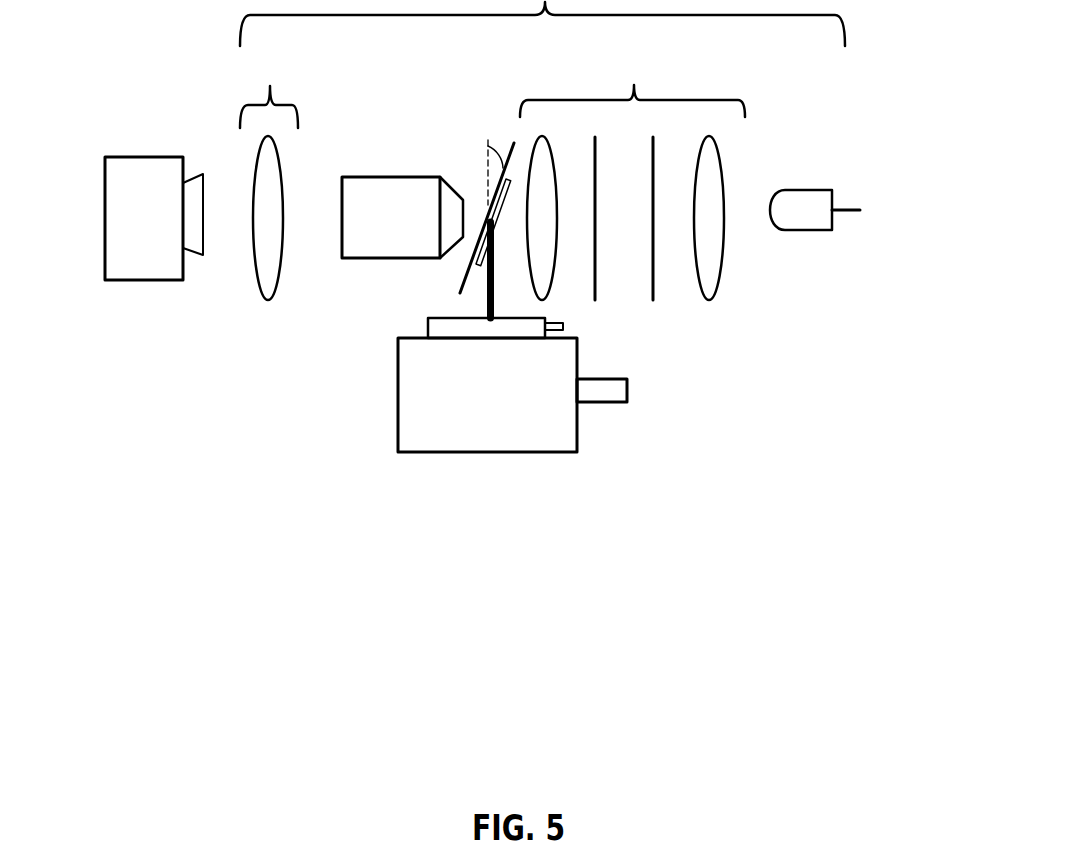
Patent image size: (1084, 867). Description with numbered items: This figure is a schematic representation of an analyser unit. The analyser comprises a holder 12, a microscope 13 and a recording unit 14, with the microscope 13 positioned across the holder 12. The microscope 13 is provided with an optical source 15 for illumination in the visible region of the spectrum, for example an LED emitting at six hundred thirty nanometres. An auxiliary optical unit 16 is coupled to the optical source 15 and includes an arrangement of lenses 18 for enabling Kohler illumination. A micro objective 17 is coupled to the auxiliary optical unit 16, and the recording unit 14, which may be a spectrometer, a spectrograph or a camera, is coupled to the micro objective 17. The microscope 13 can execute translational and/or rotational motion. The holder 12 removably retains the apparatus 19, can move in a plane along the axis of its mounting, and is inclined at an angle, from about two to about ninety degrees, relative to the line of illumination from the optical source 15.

The holder 12 is at (423, 449).
The microscope 13 is at (850, 23).
The recording unit 14 is at (133, 276).
The optical source 15 is at (800, 231).
The auxiliary optical unit 16 is at (270, 95).
The micro objective 17 is at (355, 258).
The lenses 18 is at (264, 298).
The apparatus 19 is at (470, 266).